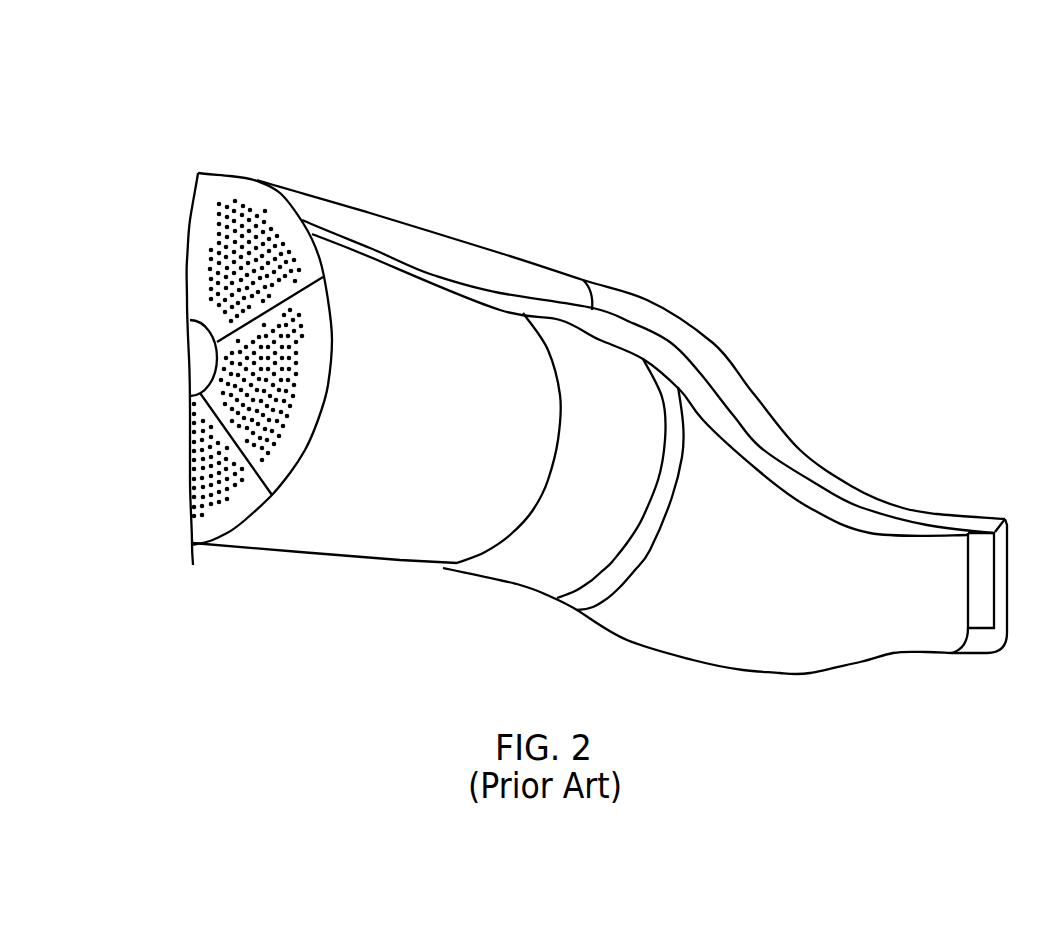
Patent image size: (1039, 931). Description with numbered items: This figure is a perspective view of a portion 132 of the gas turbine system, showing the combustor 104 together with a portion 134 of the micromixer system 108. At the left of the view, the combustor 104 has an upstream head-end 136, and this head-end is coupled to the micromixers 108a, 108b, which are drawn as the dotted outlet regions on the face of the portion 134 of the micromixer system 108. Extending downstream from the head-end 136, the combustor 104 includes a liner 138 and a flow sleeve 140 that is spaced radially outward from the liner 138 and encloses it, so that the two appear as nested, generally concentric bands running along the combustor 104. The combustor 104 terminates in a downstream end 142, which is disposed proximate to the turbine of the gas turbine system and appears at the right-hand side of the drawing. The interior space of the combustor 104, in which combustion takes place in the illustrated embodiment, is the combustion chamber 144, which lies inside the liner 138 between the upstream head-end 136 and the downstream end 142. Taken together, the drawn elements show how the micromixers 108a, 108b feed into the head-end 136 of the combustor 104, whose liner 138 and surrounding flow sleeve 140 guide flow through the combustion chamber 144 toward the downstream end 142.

The combustor 104 is at (745, 337).
The micromixer system 108 is at (313, 268).
The micromixer 108a is at (197, 259).
The micromixer 108b is at (193, 526).
The portion of the gas turbine system 132 is at (238, 86).
The portion of the micromixer system 134 is at (172, 187).
The upstream head-end 136 is at (327, 247).
The liner 138 is at (507, 310).
The flow sleeve 140 is at (427, 247).
The downstream end 142 is at (920, 623).
The combustion chamber 144 is at (374, 405).